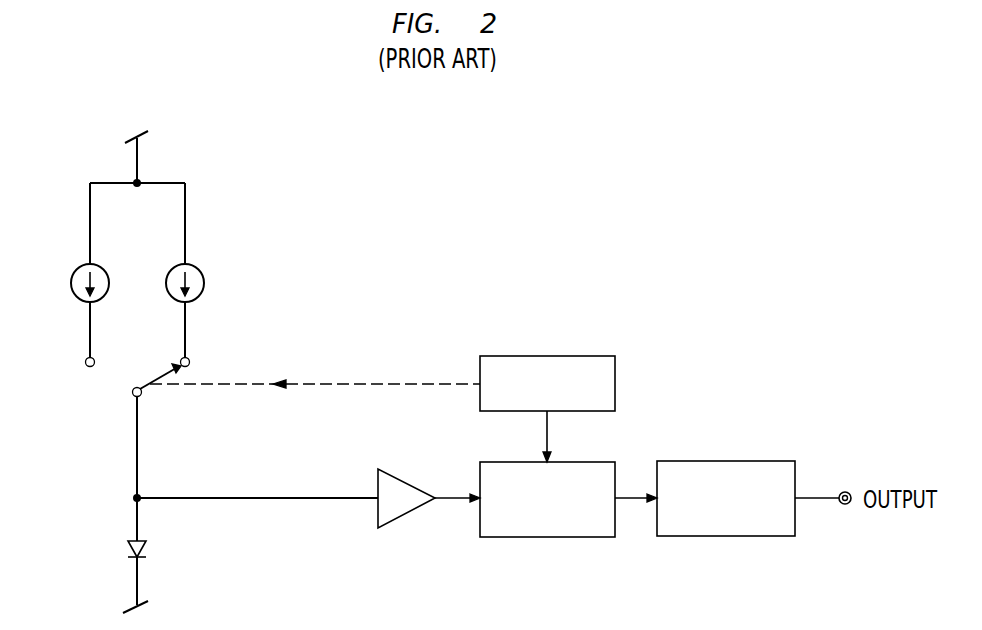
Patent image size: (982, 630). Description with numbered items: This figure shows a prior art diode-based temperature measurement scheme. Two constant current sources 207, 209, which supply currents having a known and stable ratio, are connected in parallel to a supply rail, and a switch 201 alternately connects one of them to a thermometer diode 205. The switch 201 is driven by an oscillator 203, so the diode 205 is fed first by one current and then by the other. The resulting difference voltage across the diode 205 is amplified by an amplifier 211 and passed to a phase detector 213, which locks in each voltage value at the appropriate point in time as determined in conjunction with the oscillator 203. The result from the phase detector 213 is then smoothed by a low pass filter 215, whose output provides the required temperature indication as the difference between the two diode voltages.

The switch 201 is at (165, 373).
The oscillator 203 is at (593, 356).
The thermometer diode 205 is at (128, 549).
The constant current source 207 is at (76, 268).
The constant current source 209 is at (171, 268).
The amplifier 211 is at (391, 475).
The phase detector 213 is at (594, 462).
The low pass filter 215 is at (772, 461).